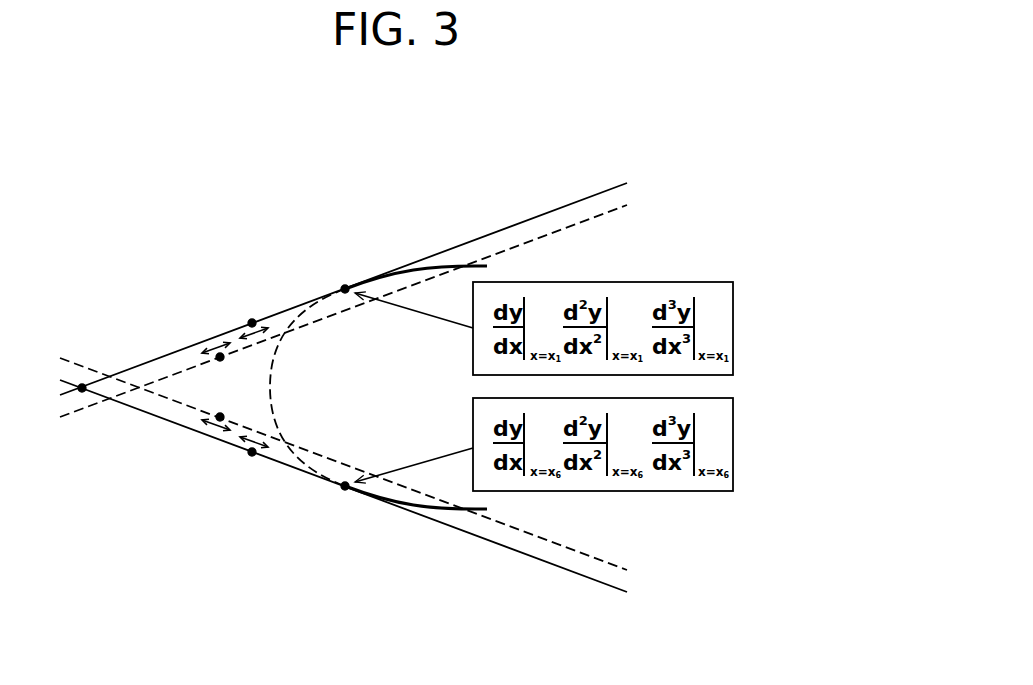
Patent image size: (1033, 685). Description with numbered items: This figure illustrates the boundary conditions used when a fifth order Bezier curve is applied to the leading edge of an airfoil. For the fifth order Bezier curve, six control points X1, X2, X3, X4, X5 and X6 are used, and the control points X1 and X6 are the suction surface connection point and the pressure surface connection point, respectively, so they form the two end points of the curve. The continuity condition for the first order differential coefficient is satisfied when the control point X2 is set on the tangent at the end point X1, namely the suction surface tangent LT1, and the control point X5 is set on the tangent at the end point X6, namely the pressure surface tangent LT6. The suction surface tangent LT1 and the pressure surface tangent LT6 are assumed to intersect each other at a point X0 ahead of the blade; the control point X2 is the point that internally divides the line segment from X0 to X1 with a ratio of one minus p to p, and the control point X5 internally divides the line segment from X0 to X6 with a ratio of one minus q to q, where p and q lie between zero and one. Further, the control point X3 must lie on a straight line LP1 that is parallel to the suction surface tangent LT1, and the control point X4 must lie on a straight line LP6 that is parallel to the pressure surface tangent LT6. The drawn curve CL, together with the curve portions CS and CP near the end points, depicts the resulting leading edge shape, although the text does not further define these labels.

The intersection point X0 is at (60, 385).
The control point X1 is at (339, 274).
The control point X2 is at (254, 315).
The control point X3 is at (228, 364).
The control point X4 is at (228, 411).
The control point X5 is at (254, 461).
The control point X6 is at (339, 508).
The clothoid curve / connecting line CL is at (268, 383).
The curve segment at start CS is at (438, 266).
The curve segment at end CP is at (438, 510).
The suction surface tangent LT1 is at (517, 225).
The straight line LP1 is at (562, 228).
The straight line LP6 is at (562, 546).
The pressure surface tangent LT6 is at (517, 550).